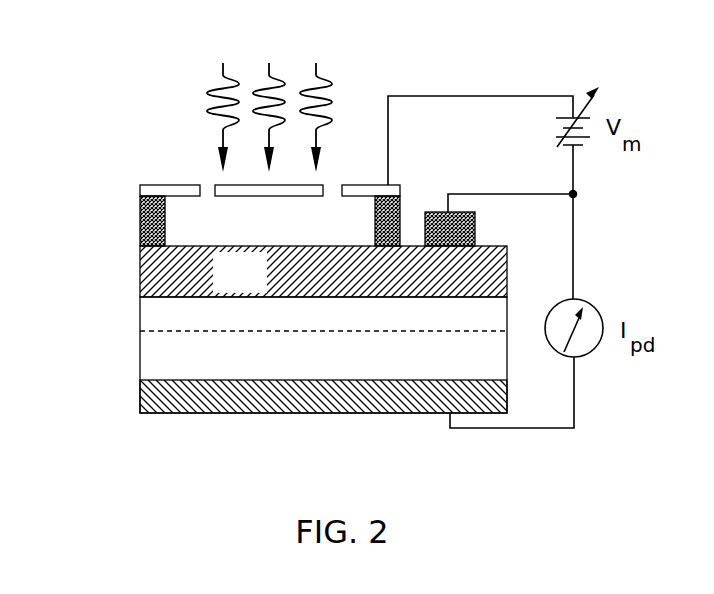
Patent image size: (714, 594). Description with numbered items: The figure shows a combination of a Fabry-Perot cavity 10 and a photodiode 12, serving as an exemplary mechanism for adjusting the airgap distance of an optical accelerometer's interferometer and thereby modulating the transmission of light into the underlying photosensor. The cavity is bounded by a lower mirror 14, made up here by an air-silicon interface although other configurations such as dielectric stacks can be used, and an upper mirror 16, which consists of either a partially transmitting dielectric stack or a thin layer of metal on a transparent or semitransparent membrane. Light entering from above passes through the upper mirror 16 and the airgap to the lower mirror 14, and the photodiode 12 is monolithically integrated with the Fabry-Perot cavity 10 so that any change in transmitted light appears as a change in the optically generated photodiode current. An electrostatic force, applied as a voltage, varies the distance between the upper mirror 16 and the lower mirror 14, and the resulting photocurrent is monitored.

The Fabry-Perot cavity 10 is at (267, 250).
The photodiode 12 is at (128, 330).
The lower mirror 14 is at (200, 246).
The upper mirror 16 is at (295, 196).